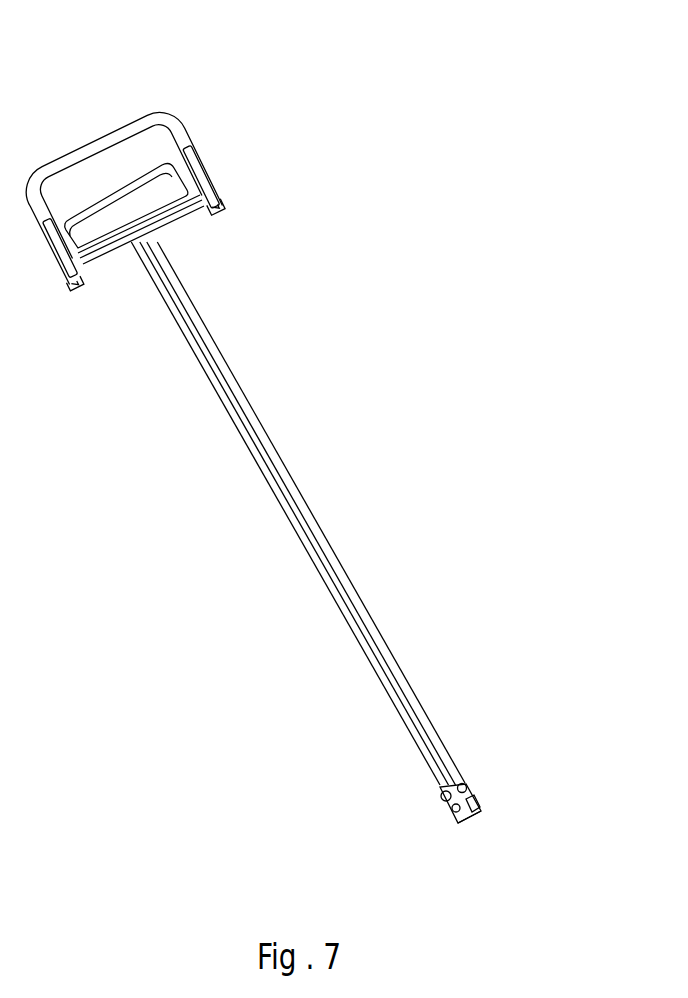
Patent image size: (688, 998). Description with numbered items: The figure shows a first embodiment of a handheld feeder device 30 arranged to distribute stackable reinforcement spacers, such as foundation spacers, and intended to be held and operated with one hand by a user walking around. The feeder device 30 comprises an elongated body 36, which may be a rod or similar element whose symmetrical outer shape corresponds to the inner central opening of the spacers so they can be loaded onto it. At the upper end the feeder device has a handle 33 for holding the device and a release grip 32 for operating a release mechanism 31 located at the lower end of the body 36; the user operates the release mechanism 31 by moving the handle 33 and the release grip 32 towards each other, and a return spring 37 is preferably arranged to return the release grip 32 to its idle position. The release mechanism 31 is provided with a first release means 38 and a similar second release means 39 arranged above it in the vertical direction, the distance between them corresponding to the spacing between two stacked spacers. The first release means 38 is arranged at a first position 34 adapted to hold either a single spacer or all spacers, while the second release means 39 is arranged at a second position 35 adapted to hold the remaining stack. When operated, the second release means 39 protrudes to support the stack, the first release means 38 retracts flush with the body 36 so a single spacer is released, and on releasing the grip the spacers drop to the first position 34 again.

The handheld feeder device 30 is at (277, 347).
The release mechanism 31 is at (522, 752).
The release grip 32 is at (178, 139).
The handle 33 is at (120, 187).
The first position 34 is at (427, 841).
The second position 35 is at (405, 800).
The body 36 is at (328, 537).
The return spring 37 is at (208, 251).
The first release means 38 is at (503, 796).
The second release means 39 is at (479, 758).